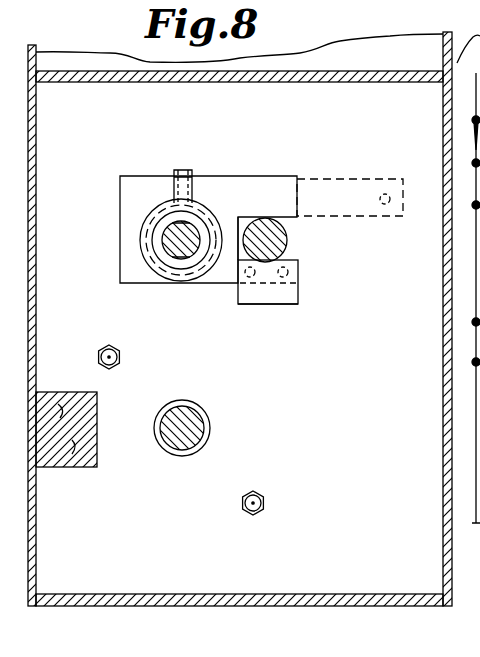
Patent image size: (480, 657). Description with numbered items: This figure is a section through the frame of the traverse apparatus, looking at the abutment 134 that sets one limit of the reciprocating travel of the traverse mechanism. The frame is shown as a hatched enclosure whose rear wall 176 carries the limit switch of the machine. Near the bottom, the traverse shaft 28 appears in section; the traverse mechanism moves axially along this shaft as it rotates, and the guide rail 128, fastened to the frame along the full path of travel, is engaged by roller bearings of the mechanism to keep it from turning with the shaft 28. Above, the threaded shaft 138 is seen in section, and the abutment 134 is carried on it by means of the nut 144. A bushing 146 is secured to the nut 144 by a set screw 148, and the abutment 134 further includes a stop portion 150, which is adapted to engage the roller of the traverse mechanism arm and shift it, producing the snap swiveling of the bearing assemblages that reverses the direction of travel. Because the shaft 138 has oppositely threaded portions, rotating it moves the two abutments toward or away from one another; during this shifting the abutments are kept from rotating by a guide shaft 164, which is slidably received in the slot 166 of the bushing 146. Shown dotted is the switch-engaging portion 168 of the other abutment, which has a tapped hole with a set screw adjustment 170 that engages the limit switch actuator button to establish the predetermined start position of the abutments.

The traverse shaft 28 is at (174, 446).
The guide rail 128 is at (85, 468).
The abutment 134 is at (261, 304).
The threaded shaft 138 is at (177, 243).
The nut 144 is at (173, 270).
The bushing 146 is at (124, 225).
The set screw 148 is at (186, 168).
The stop portion 150 is at (277, 303).
The guide shaft 164 is at (288, 244).
The slot 166 is at (240, 220).
The switch-engaging portion 168 is at (355, 178).
The set screw adjustment 170 is at (385, 193).
The rear wall 176 is at (442, 470).